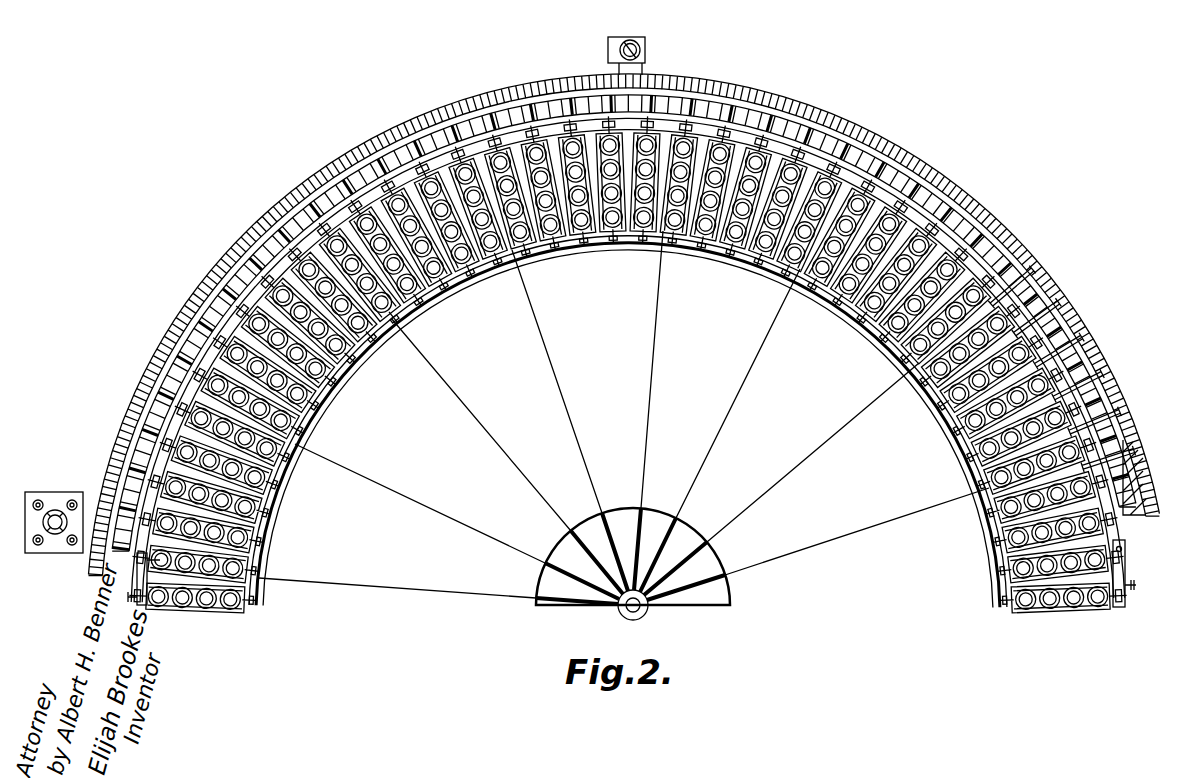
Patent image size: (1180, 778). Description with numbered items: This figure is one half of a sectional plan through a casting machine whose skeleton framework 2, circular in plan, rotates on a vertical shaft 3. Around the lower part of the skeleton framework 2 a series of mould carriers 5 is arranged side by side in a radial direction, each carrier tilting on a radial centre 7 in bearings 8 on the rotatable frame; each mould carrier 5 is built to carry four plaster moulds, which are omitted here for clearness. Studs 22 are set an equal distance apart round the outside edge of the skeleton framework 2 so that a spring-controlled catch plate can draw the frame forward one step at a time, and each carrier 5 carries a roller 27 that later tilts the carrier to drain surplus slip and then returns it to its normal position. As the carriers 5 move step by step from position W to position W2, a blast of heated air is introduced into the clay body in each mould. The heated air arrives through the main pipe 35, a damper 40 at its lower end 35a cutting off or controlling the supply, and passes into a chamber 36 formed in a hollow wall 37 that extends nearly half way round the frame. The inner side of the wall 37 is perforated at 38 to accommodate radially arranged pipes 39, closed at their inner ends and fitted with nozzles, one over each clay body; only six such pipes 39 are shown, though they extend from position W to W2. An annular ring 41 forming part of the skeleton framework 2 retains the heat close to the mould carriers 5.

The skeleton framework 2 is at (588, 244).
The vertical shaft 3 is at (640, 594).
The mould carrier 5 is at (638, 235).
The radial centre 7 is at (479, 292).
The bearing 8 is at (437, 316).
The stud 22 is at (1124, 548).
The roller 27 is at (1128, 585).
The pipe 35 is at (641, 50).
The lower end of pipe 35a is at (634, 44).
The chamber 36 is at (492, 103).
The wall 37 is at (388, 143).
The perforations 38 is at (431, 121).
The radially arranged pipe 39 is at (1062, 301).
The damper 40 is at (608, 47).
The annular ring 41 is at (364, 341).
The position W is at (857, 531).
The position W2 is at (397, 573).